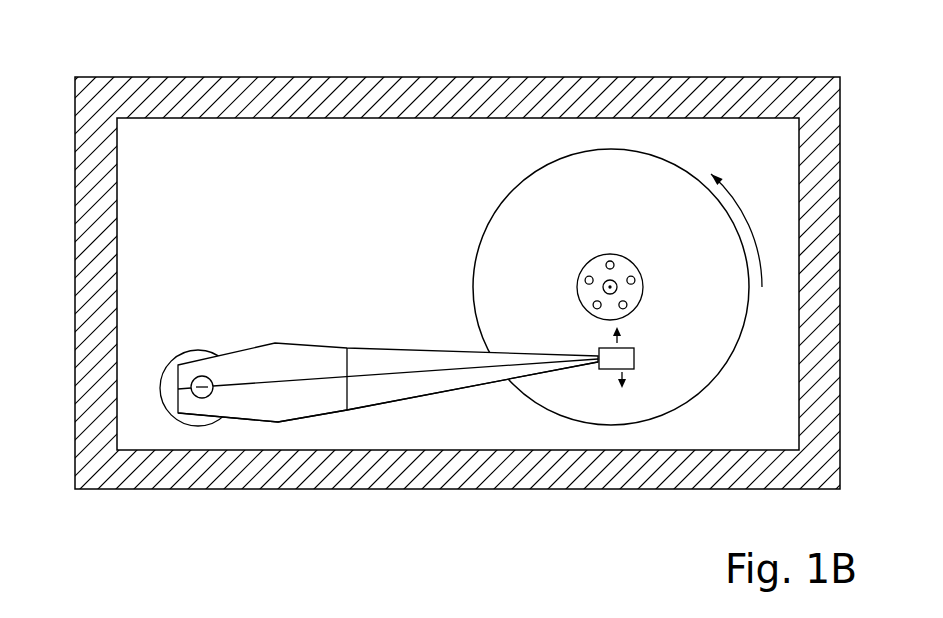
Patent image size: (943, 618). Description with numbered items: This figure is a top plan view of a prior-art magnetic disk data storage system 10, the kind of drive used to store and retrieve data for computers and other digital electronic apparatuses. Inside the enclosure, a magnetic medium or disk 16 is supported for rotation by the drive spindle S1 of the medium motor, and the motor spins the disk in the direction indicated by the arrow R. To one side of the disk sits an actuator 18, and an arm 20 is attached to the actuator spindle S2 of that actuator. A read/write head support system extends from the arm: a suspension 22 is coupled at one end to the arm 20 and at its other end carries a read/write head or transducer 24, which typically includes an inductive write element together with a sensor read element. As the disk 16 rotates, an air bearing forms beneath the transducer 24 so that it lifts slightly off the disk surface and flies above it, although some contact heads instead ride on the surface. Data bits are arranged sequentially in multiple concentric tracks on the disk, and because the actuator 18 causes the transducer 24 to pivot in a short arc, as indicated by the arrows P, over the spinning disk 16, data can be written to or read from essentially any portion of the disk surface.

The magnetic disk data storage system 10 is at (813, 65).
The magnetic disk 16 is at (630, 206).
The actuator 18 is at (208, 353).
The arm 20 is at (317, 355).
The suspension 22 is at (416, 387).
The read/write head or transducer 24 is at (633, 360).
The drive spindle S1 is at (632, 267).
The actuator spindle S2 is at (205, 400).
The arrow indicating disk rotation R is at (741, 230).
The arrows indicating transducer pivot motion P is at (628, 358).